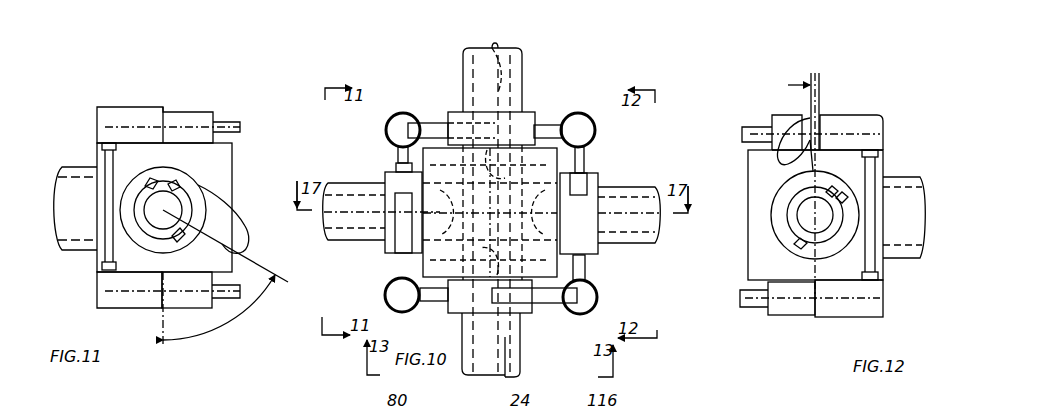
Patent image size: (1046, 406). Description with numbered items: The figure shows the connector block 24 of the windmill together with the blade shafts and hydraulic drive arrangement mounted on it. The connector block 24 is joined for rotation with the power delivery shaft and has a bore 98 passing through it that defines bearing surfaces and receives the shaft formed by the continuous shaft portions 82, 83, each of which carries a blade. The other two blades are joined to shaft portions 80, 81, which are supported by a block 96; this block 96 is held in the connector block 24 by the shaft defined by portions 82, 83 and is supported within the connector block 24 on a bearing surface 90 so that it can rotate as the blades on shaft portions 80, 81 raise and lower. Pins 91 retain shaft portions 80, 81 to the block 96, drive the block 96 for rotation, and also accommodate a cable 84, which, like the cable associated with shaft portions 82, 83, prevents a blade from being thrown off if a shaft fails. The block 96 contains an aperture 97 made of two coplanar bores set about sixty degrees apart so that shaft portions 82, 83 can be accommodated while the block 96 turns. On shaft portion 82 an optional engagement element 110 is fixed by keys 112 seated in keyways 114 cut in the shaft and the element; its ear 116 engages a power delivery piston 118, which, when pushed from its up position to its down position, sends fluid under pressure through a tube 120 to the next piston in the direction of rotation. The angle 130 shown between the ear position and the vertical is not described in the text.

In FIG. 11, the connector block 24 is at (232, 148).
In FIG. 10, the connector block 24 is at (390, 245).
In FIG. 12, the connector block 24 is at (752, 272).
In FIG. 10, the shaft portion 80 is at (517, 343).
In FIG. 10, the shaft portion 81 is at (525, 68).
In FIG. 11, the shaft portion 82 is at (153, 230).
In FIG. 10, the shaft portion 82 is at (347, 183).
In FIG. 10, the shaft portion 83 is at (622, 240).
In FIG. 12, the shaft portion 83 is at (793, 215).
In FIG. 10, the cable 84 is at (490, 63).
In FIG. 10, the bearing surface 90 is at (400, 168).
In FIG. 10, the pins 91 is at (575, 165).
In FIG. 10, the block 96 is at (433, 147).
In FIG. 10, the aperture 97 is at (447, 208).
In FIG. 10, the bore 98 is at (560, 223).
In FIG. 11, the engagement element 110 is at (198, 181).
In FIG. 10, the engagement element 110 is at (595, 175).
In FIG. 12, the engagement element 110 is at (827, 255).
In FIG. 11, the keys 112 is at (152, 183).
In FIG. 12, the keys 112 is at (843, 197).
In FIG. 11, the keyways 114 is at (177, 182).
In FIG. 12, the keyways 114 is at (832, 190).
In FIG. 11, the ear 116 is at (243, 217).
In FIG. 12, the ear 116 is at (787, 163).
In FIG. 11, the power delivery piston 118 is at (193, 300).
In FIG. 10, the power delivery piston 118 is at (395, 115).
In FIG. 12, the power delivery piston 118 is at (818, 138).
In FIG. 11, the tube 120 is at (110, 172).
In FIG. 12, the tube 120 is at (867, 258).
In FIG. 11, the angle 130 is at (209, 340).